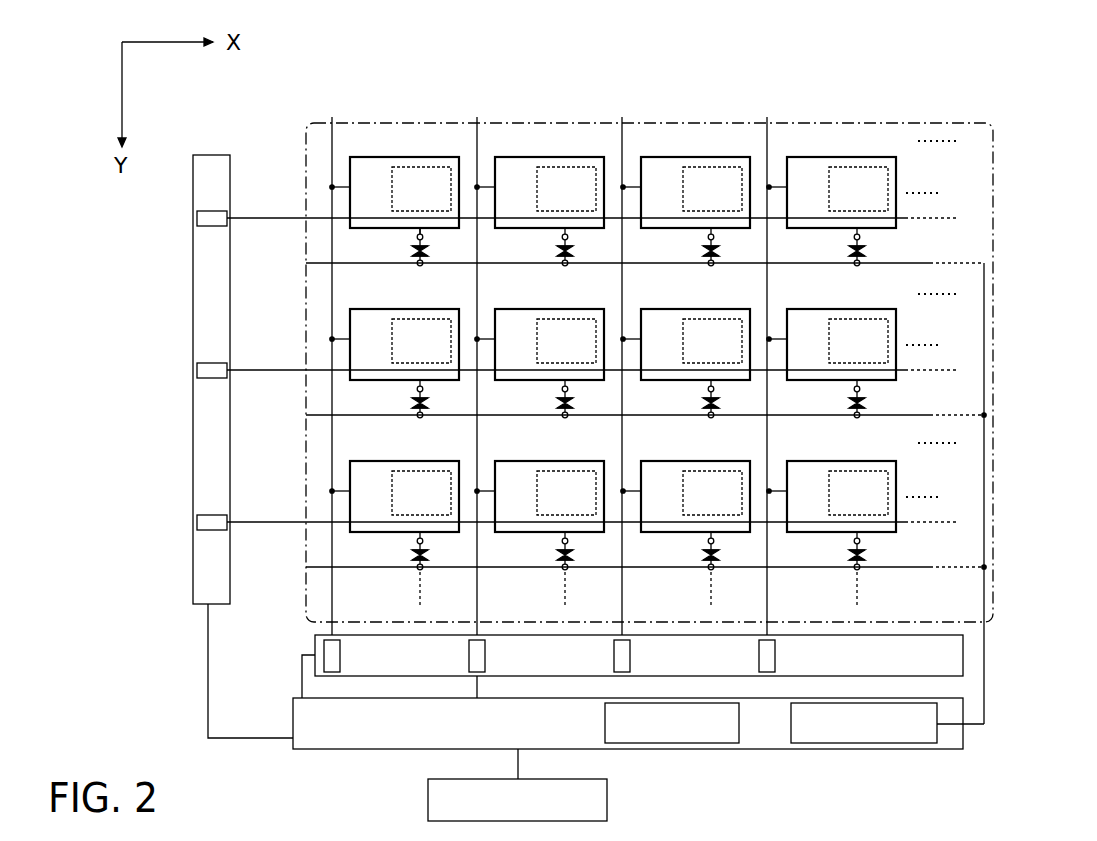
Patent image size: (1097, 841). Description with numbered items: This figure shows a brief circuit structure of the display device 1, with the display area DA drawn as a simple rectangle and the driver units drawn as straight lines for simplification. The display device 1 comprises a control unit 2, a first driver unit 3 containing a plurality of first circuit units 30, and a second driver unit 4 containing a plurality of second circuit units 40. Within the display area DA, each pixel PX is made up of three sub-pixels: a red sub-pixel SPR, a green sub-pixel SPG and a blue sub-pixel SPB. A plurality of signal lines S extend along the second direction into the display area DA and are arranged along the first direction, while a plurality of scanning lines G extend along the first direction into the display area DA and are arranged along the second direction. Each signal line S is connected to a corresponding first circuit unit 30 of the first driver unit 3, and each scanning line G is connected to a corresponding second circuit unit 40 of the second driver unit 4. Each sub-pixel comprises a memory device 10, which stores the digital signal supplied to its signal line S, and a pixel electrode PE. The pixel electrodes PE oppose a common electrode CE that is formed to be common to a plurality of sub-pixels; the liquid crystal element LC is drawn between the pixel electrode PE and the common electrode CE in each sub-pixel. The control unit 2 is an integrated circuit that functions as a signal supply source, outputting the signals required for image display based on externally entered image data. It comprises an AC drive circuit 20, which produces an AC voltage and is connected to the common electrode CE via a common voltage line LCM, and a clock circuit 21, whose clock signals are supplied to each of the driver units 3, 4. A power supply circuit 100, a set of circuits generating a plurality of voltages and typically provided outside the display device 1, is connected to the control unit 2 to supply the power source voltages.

The display device 1 is at (1012, 69).
The control unit 2 is at (293, 702).
The first driver unit 3 is at (963, 655).
The second driver unit 4 is at (193, 200).
The memory device 10 is at (396, 165).
The AC drive circuit 20 is at (912, 744).
The clock circuit 21 is at (716, 744).
The first circuit unit 30 is at (775, 655).
The second circuit unit 40 is at (193, 522).
The power supply circuit 100 is at (607, 798).
The display area DA is at (833, 123).
The pixel PX is at (659, 47).
The red sub-pixel SPR is at (432, 130).
The green sub-pixel SPG is at (537, 130).
The blue sub-pixel SPB is at (657, 130).
The signal line S is at (548, 363).
The scanning line G is at (592, 358).
The pixel electrode PE is at (417, 238).
The common electrode CE is at (418, 266).
The liquid crystal layer LC is at (430, 250).
The common voltage line LCM is at (985, 700).